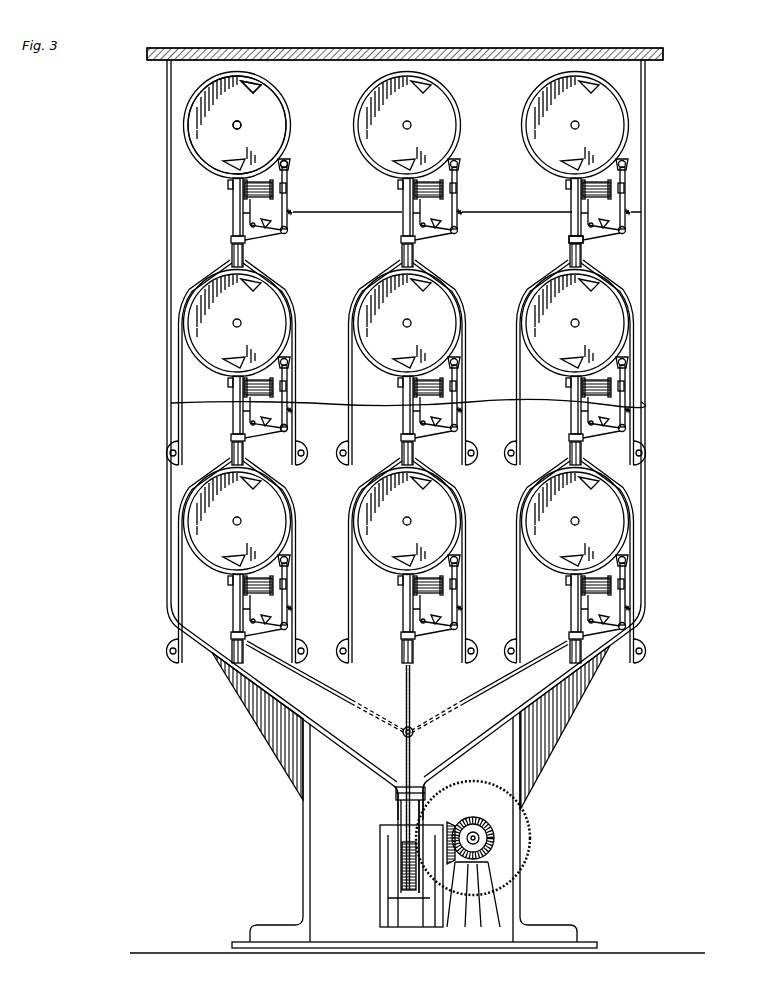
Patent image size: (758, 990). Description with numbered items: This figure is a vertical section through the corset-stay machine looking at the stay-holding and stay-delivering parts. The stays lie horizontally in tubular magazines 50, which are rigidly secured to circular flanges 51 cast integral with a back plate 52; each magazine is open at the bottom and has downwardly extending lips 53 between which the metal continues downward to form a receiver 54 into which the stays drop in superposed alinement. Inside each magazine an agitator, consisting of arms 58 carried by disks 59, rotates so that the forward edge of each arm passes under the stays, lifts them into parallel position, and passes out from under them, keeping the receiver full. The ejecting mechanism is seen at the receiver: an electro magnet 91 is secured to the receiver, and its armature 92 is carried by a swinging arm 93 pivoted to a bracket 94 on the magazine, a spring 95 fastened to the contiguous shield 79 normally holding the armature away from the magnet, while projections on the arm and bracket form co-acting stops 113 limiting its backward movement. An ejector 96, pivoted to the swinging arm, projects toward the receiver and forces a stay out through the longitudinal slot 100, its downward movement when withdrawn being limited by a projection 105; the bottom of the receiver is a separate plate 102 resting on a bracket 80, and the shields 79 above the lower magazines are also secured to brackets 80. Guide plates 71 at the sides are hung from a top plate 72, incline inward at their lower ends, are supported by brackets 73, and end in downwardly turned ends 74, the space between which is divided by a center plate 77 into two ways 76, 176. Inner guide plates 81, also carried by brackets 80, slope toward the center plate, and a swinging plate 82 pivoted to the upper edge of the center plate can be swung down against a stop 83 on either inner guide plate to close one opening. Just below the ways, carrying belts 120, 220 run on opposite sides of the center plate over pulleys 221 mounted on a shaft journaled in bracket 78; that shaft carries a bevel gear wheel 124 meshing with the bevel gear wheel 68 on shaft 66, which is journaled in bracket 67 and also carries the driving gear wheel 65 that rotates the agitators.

The top plate 72 is at (437, 48).
The back plate 52 is at (523, 78).
The arms 58 is at (248, 90).
The tubular magazines 50 is at (288, 120).
The disks 59 is at (230, 150).
The circular flanges 51 is at (290, 137).
The bracket 94 is at (288, 163).
The co-acting stops 113 is at (290, 168).
The swinging arm 93 is at (290, 199).
The electro magnet 91 is at (256, 193).
The armature 92 is at (284, 195).
The spring 95 is at (293, 213).
The lips 53 is at (231, 192).
The receiver 54 is at (238, 212).
The longitudinal slot 100 is at (233, 241).
The ejector 96 is at (270, 236).
The shields 79 is at (276, 272).
The plate 102 is at (400, 238).
The brackets 80 is at (398, 244).
The guide plates 71 is at (166, 326).
The projection 105 is at (283, 433).
The inner guide plates 81 is at (305, 676).
The swinging plate 82 is at (405, 681).
The stop 83 is at (350, 703).
The brackets 73 is at (550, 708).
The center plate 77 is at (411, 745).
The way 76 is at (397, 787).
The way 176 is at (421, 786).
The carrying belt 220 is at (430, 797).
The downwardly turned ends 74 is at (396, 790).
The carrying belt 120 is at (400, 808).
The pulleys 221 is at (400, 817).
The shaft 66 is at (476, 835).
The driving gear wheel 65 is at (532, 835).
The bevel gear wheel 68 is at (480, 857).
The bracket 67 is at (483, 911).
The bevel gear wheel 124 is at (454, 863).
The bracket 78 is at (380, 870).